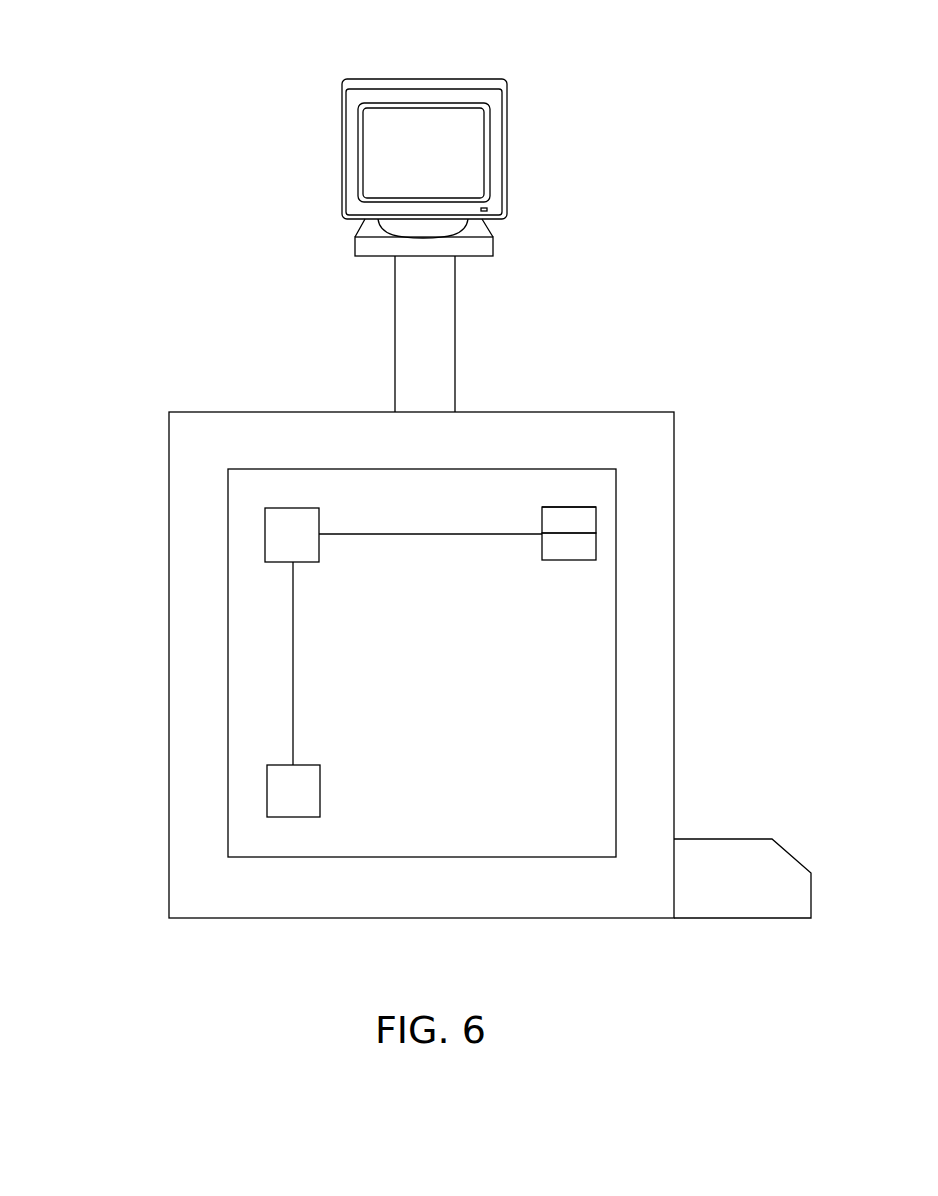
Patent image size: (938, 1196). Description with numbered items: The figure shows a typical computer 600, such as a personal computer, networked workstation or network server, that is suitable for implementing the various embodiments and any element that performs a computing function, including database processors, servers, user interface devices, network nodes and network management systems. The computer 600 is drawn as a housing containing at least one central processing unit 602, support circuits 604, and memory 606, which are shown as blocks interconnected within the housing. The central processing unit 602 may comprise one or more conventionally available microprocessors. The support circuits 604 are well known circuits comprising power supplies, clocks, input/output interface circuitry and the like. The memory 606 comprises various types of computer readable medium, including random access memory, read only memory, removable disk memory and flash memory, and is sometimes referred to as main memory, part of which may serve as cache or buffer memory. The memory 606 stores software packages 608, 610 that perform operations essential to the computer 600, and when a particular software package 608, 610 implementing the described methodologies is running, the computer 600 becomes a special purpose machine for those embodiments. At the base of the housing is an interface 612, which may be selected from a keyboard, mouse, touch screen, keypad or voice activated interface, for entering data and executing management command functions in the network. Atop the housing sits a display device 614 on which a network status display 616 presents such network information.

The computer 600 is at (169, 866).
The central processing unit 602 is at (265, 535).
The support circuits 604 is at (267, 793).
The memory 606 is at (567, 507).
The software package 608 is at (596, 518).
The software package 610 is at (596, 545).
The interface 612 is at (717, 839).
The display device 614 is at (452, 79).
The network status display 616 is at (462, 158).